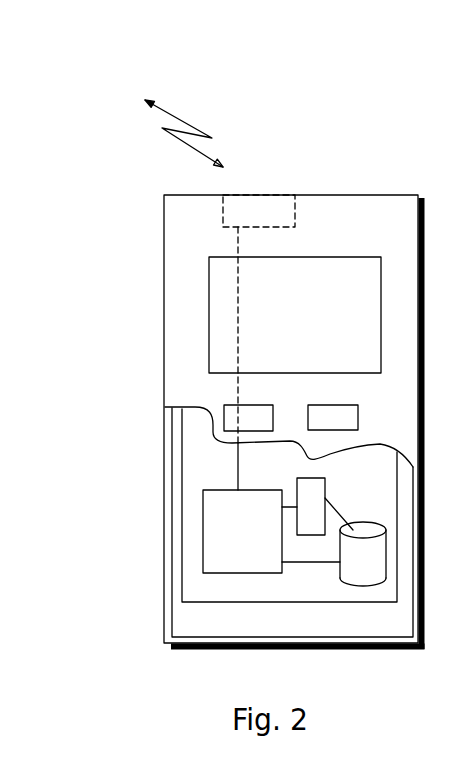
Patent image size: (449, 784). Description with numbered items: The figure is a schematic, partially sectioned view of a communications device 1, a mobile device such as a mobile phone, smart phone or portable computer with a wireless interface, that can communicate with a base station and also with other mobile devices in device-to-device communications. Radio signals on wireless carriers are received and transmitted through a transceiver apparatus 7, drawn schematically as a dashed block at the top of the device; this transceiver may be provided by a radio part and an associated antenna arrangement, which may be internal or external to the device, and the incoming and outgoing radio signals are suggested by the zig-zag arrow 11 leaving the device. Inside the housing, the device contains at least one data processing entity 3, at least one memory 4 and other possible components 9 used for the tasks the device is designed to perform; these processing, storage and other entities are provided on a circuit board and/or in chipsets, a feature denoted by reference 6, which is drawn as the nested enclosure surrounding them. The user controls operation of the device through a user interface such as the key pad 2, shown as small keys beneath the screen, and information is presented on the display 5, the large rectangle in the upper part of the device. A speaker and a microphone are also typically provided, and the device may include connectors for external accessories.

The communications device 1 is at (164, 235).
The key pad 2 is at (228, 420).
The data processing entity 3 is at (210, 518).
The memory 4 is at (357, 565).
The display 5 is at (224, 303).
The circuit board and/or chipsets 6 is at (202, 592).
The transceiver apparatus 7 is at (246, 212).
The other possible components 9 is at (312, 492).
The signal 11 is at (152, 101).